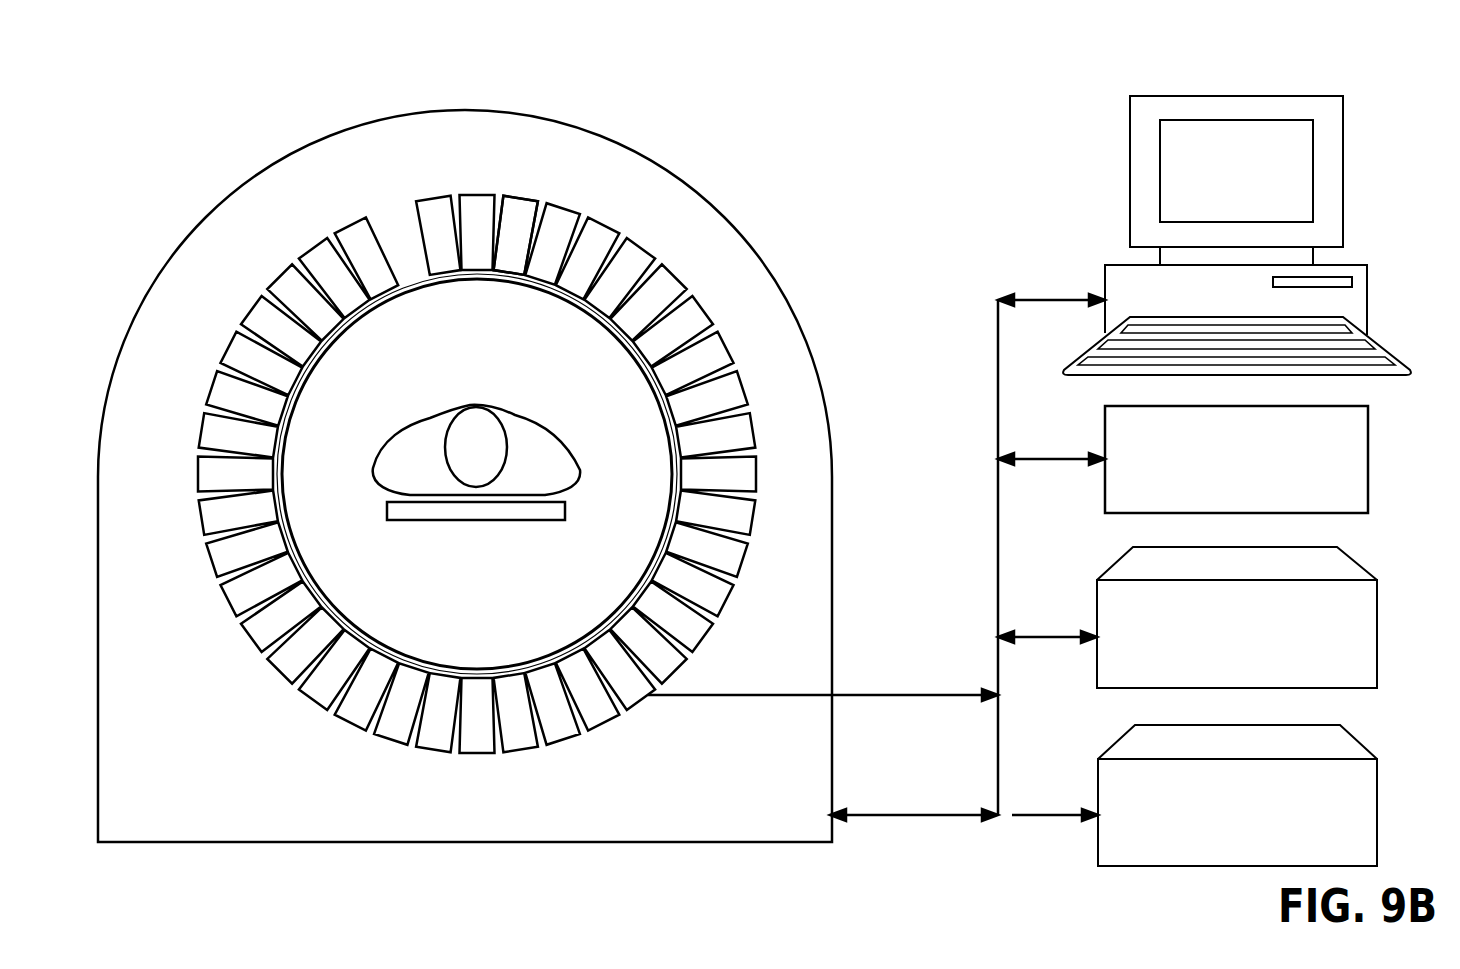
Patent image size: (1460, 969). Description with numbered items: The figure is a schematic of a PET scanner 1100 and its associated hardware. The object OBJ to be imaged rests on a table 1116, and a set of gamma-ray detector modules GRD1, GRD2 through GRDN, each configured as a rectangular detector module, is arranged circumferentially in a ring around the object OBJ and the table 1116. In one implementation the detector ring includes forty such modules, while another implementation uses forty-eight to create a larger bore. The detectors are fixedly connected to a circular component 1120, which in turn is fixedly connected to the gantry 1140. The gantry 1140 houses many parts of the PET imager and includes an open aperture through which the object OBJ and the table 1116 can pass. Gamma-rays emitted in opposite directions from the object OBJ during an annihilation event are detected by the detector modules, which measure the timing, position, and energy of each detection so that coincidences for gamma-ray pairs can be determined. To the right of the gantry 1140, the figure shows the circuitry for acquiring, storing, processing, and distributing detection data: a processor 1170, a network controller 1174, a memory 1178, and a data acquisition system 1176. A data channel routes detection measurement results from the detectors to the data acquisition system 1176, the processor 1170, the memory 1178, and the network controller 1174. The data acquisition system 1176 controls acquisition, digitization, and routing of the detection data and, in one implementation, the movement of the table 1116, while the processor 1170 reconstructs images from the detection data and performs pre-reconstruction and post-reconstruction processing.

The PET scanner 1100 is at (910, 46).
The gantry 1140 is at (745, 240).
The circular component 1120 is at (459, 405).
The gamma-ray detector GRD1 is at (482, 197).
The gamma-ray detector GRD2 is at (528, 199).
The gamma-ray detector GRDN is at (432, 199).
The object OBJ is at (443, 409).
The table 1116 is at (443, 521).
The processor 1170 is at (1204, 235).
The network controller 1174 is at (1183, 459).
The memory 1178 is at (1187, 617).
The data acquisition system 1176 is at (1194, 795).